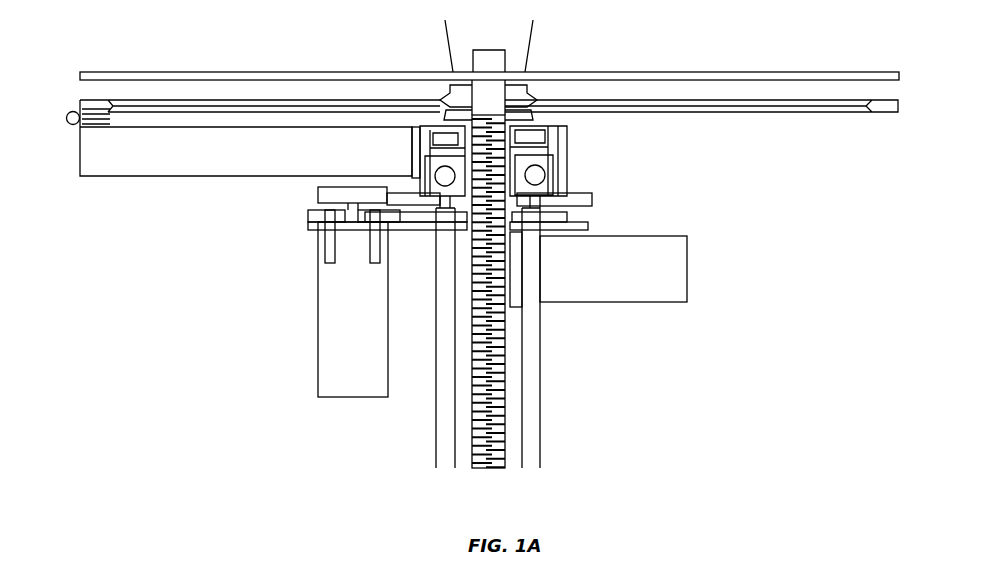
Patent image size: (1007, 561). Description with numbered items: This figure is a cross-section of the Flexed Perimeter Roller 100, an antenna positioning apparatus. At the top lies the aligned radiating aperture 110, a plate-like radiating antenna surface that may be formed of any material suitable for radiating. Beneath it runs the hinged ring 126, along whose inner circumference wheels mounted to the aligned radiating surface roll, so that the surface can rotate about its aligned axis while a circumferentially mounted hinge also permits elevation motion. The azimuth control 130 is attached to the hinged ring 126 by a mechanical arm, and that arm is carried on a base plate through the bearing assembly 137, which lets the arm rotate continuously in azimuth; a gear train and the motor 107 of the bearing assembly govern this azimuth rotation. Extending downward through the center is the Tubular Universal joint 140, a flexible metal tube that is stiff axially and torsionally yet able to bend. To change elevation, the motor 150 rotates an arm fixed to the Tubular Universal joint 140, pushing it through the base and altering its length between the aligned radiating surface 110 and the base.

The Flexed Perimeter Roller 100 is at (540, 457).
The motor 107 is at (318, 375).
The aligned radiating aperture 110 is at (87, 71).
The hinged ring 126 is at (735, 120).
The azimuth control 130 is at (127, 177).
The bearing assembly 137 is at (568, 168).
The Tubular Universal joint 140 is at (506, 420).
The motor 150 is at (687, 268).